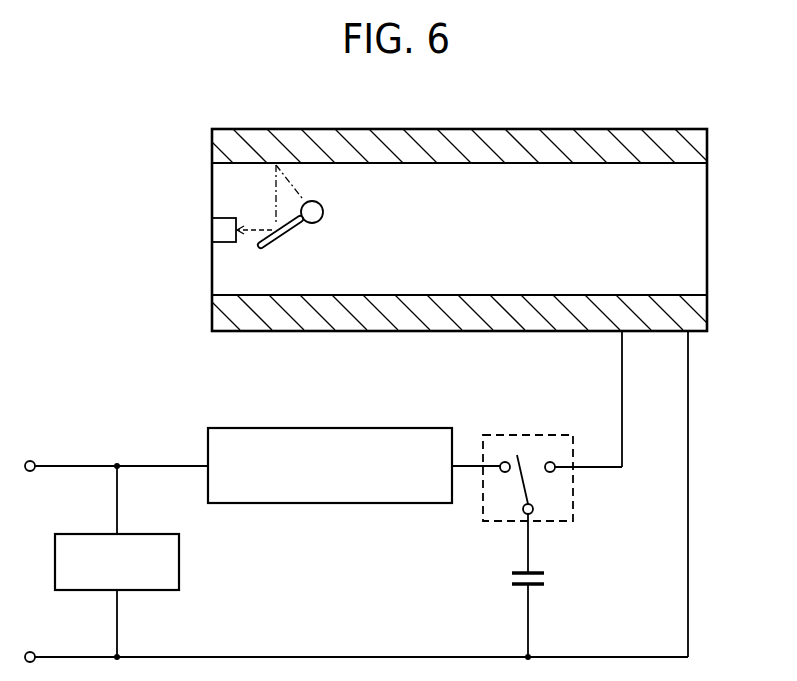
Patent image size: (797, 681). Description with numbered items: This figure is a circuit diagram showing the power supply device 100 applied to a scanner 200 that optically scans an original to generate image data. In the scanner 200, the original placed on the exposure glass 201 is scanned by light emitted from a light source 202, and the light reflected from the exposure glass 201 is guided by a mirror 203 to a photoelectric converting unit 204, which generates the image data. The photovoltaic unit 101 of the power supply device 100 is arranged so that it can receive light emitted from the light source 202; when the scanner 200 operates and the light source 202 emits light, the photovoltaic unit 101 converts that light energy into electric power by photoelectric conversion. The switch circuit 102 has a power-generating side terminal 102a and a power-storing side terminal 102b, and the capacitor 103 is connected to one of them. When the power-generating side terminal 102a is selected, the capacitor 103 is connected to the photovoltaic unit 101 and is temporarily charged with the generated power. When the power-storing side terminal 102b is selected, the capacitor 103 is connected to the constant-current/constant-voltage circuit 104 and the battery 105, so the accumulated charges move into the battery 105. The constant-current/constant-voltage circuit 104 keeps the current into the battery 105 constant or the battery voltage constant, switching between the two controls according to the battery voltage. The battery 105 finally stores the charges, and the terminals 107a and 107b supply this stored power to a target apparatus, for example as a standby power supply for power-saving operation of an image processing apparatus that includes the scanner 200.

The power supply device 100 is at (717, 294).
The photovoltaic unit 101 is at (240, 333).
The switch circuit 102 is at (576, 498).
The power-generating side terminal 102a is at (556, 460).
The power-storing side terminal 102b is at (506, 458).
The capacitor 103 is at (517, 588).
The constant-current/constant-voltage circuit 104 is at (420, 428).
The battery 105 is at (182, 560).
The terminal 107a is at (36, 458).
The terminal 107b is at (36, 649).
The scanner 200 is at (717, 127).
The exposure glass 201 is at (672, 128).
The light source 202 is at (324, 212).
The mirror 203 is at (283, 240).
The photoelectric converting unit 204 is at (226, 216).